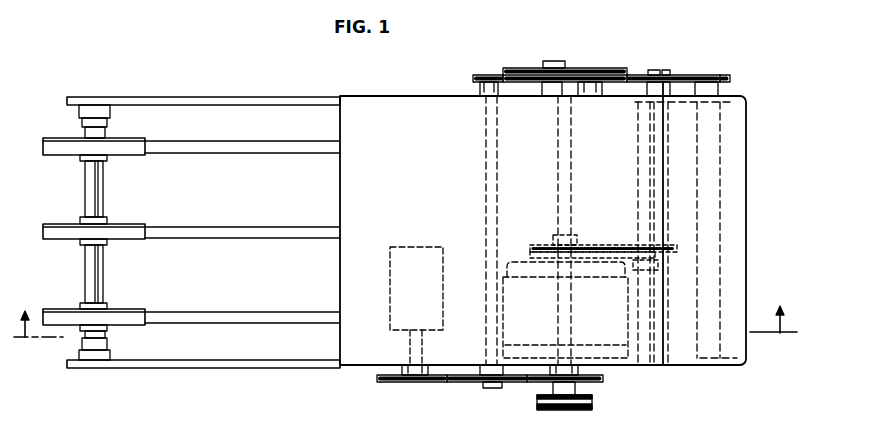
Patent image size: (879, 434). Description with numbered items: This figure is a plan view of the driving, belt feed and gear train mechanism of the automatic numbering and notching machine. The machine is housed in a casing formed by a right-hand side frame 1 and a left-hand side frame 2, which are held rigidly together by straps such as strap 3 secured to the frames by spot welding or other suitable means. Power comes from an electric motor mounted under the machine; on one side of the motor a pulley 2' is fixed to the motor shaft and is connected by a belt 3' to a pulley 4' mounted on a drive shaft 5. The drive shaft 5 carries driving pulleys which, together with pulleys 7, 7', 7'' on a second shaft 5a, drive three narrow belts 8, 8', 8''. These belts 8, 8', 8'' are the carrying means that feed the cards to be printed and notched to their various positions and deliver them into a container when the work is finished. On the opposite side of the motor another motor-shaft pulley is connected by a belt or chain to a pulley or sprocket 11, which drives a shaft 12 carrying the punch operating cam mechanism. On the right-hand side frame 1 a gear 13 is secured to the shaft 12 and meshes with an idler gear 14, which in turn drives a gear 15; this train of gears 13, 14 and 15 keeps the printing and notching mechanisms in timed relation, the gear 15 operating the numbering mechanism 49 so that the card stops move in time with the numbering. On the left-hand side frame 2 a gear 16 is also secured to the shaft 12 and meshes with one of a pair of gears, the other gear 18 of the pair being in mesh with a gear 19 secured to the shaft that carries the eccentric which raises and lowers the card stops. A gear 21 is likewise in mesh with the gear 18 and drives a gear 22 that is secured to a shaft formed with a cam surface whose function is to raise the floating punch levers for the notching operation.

The right-hand side frame 1 is at (263, 368).
The left-hand side frame 2 is at (203, 89).
The pulley 2' is at (603, 230).
The strap 3 is at (405, 336).
The belt 3' is at (603, 231).
The pulley 4' is at (662, 265).
The drive shaft 5 is at (639, 156).
The shaft 5a is at (88, 181).
The pulley 7 is at (115, 339).
The pulley 7' is at (108, 257).
The pulley 7'' is at (113, 166).
The belt 8 is at (191, 303).
The belt 8' is at (191, 219).
The belt 8'' is at (191, 137).
The pulley or sprocket 11 is at (592, 405).
The shaft 12 is at (570, 161).
The gear 13 is at (603, 378).
The idler gear 14 is at (461, 382).
The gear 15 is at (403, 382).
The gear 16 is at (607, 68).
The gear 18 is at (588, 90).
The gear 19 is at (473, 78).
The gear 21 is at (686, 75).
The gear 22 is at (728, 76).
The numbering mechanism 49 is at (390, 283).